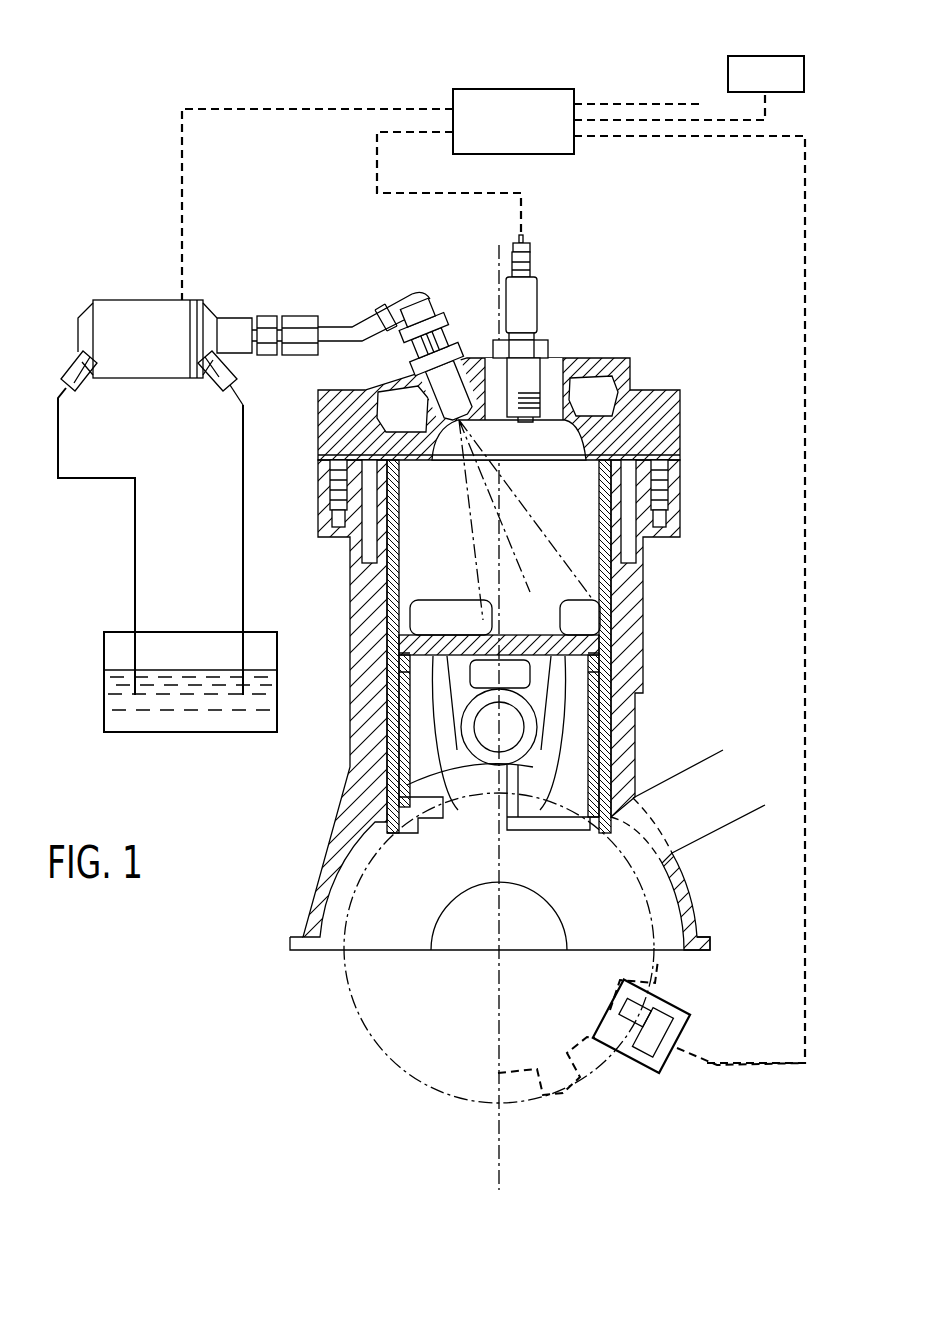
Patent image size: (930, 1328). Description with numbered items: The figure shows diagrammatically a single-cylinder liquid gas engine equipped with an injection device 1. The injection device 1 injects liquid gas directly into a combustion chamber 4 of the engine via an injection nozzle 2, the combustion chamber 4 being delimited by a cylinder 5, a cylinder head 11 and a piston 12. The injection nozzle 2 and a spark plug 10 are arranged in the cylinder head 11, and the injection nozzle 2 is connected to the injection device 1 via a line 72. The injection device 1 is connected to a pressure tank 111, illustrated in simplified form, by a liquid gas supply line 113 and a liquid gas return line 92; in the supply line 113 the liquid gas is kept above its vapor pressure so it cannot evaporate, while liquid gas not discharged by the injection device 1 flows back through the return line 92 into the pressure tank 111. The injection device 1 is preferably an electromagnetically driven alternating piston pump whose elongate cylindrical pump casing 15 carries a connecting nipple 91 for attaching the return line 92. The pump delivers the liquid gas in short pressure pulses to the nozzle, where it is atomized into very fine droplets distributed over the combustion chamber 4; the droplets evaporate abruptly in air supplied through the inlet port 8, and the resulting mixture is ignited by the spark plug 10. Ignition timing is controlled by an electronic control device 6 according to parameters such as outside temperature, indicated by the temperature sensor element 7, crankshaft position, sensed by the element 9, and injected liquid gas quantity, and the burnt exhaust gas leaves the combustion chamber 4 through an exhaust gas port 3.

The injection device 1 is at (164, 517).
The injection nozzle 2 is at (458, 353).
The exhaust gas port 3 is at (365, 622).
The combustion chamber 4 is at (598, 540).
The cylinder 5 is at (636, 632).
The electronic control device 6 is at (513, 100).
The temperature sensor 7 is at (790, 55).
The inlet port 8 is at (653, 797).
The crank angle sensor 9 is at (656, 1075).
The spark plug 10 is at (533, 303).
The cylinder head 11 is at (580, 365).
The piston 12 is at (565, 660).
The pump casing 15 is at (117, 305).
The line 72 is at (342, 330).
The connecting nipple 91 is at (213, 382).
The liquid gas return line 92 is at (245, 480).
The pressure tank 111 is at (145, 720).
The liquid gas supply line 113 is at (58, 437).